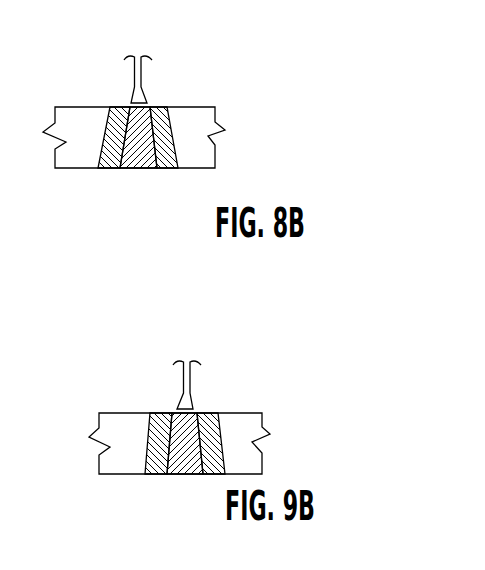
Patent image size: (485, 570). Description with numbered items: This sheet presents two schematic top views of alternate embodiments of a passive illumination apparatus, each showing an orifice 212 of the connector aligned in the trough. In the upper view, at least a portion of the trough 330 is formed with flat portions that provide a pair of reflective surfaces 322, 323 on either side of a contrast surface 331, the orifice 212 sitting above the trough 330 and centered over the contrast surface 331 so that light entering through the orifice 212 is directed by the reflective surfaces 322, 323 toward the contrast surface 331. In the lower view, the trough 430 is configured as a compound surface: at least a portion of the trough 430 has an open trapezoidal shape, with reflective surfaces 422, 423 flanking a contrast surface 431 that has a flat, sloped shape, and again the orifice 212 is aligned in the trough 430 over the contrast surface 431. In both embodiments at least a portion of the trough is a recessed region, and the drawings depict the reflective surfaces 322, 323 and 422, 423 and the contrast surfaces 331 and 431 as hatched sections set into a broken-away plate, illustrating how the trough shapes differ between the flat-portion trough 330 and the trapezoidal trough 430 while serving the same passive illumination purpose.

In FIG. 8B, the orifice 212 is at (141, 80).
In FIG. 9B, the orifice 212 is at (190, 386).
In FIG. 8B, the reflective surface 322 is at (113, 121).
In FIG. 8B, the reflective surface 323 is at (172, 131).
In FIG. 8B, the trough 330 is at (265, 105).
In FIG. 8B, the contrast surface 331 is at (158, 167).
In FIG. 9B, the reflective surface 422 is at (157, 438).
In FIG. 9B, the reflective surface 423 is at (213, 440).
In FIG. 9B, the trough 430 is at (104, 364).
In FIG. 9B, the contrast surface 431 is at (193, 453).